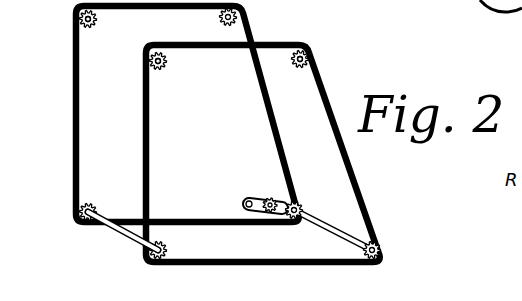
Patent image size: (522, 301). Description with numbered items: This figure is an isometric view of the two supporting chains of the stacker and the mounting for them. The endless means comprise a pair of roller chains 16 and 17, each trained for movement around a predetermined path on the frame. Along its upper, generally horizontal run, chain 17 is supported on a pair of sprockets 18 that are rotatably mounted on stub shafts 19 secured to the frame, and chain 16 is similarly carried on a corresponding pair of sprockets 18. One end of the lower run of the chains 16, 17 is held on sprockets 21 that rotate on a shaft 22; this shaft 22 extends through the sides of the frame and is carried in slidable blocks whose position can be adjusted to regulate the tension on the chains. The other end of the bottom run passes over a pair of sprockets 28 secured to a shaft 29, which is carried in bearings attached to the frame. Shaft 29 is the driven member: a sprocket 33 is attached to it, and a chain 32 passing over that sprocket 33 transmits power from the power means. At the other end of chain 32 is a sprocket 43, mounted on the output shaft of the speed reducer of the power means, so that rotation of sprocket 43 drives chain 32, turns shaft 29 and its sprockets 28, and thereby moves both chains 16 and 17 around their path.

The roller chain 16 is at (73, 75).
The roller chain 17 is at (142, 115).
The sprocket 18 is at (95, 22).
The stub shaft 19 is at (91, 28).
The sprocket 21 is at (92, 203).
The shaft 22 is at (120, 235).
The sprocket 28 is at (288, 222).
The shaft 29 is at (342, 238).
The chain 32 is at (260, 218).
The sprocket 33 is at (275, 193).
The sprocket 43 is at (252, 199).